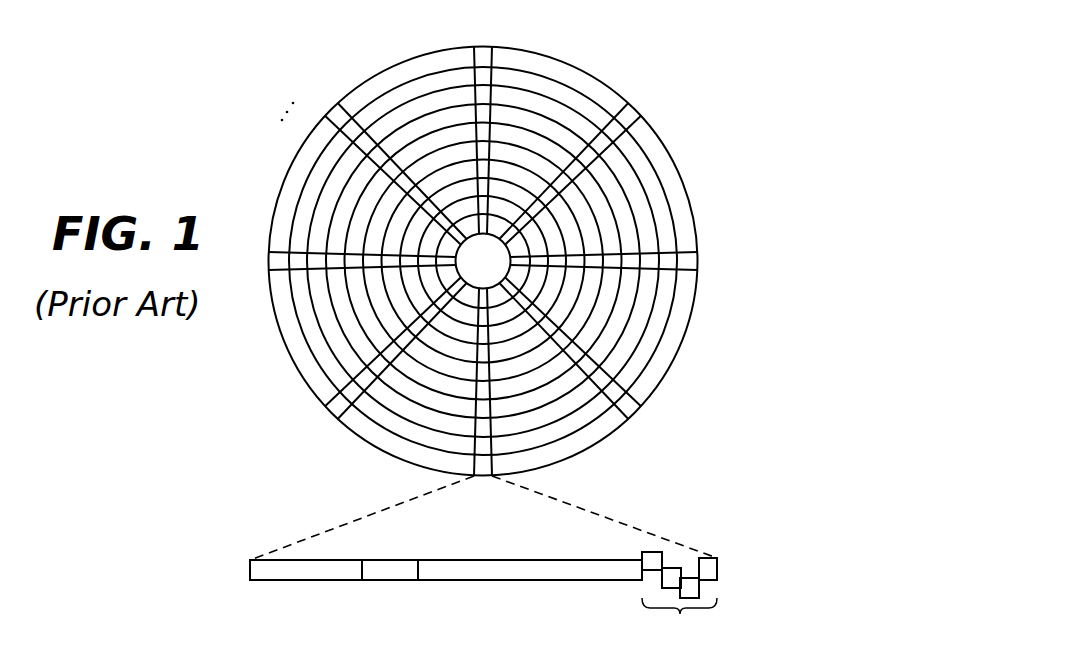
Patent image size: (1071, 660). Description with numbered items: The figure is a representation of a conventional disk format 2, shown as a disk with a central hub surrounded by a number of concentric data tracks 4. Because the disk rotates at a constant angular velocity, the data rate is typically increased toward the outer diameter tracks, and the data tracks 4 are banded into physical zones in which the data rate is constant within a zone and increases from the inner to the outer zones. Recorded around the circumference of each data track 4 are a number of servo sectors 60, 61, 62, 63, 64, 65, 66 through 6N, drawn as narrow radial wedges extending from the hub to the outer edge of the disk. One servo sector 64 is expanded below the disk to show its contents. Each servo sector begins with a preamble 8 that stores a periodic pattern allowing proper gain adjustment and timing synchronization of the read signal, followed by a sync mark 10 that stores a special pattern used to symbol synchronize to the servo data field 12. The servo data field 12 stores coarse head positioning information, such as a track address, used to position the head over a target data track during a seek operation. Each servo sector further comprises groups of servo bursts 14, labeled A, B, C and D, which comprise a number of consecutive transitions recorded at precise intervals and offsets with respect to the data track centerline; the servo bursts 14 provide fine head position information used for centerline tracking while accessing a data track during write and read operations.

The disk format 2 is at (320, 47).
The data tracks 4 is at (557, 90).
The servo sector 60 is at (486, 52).
The servo sector 61 is at (632, 113).
The servo sector 62 is at (700, 262).
The servo sector 63 is at (632, 412).
The servo sector 64 is at (382, 500).
The servo sector 65 is at (333, 410).
The servo sector 66 is at (272, 260).
The servo sector 6N is at (338, 115).
The preamble 8 is at (292, 582).
The sync mark 10 is at (389, 582).
The servo data field 12 is at (522, 582).
The servo bursts 14 is at (590, 549).